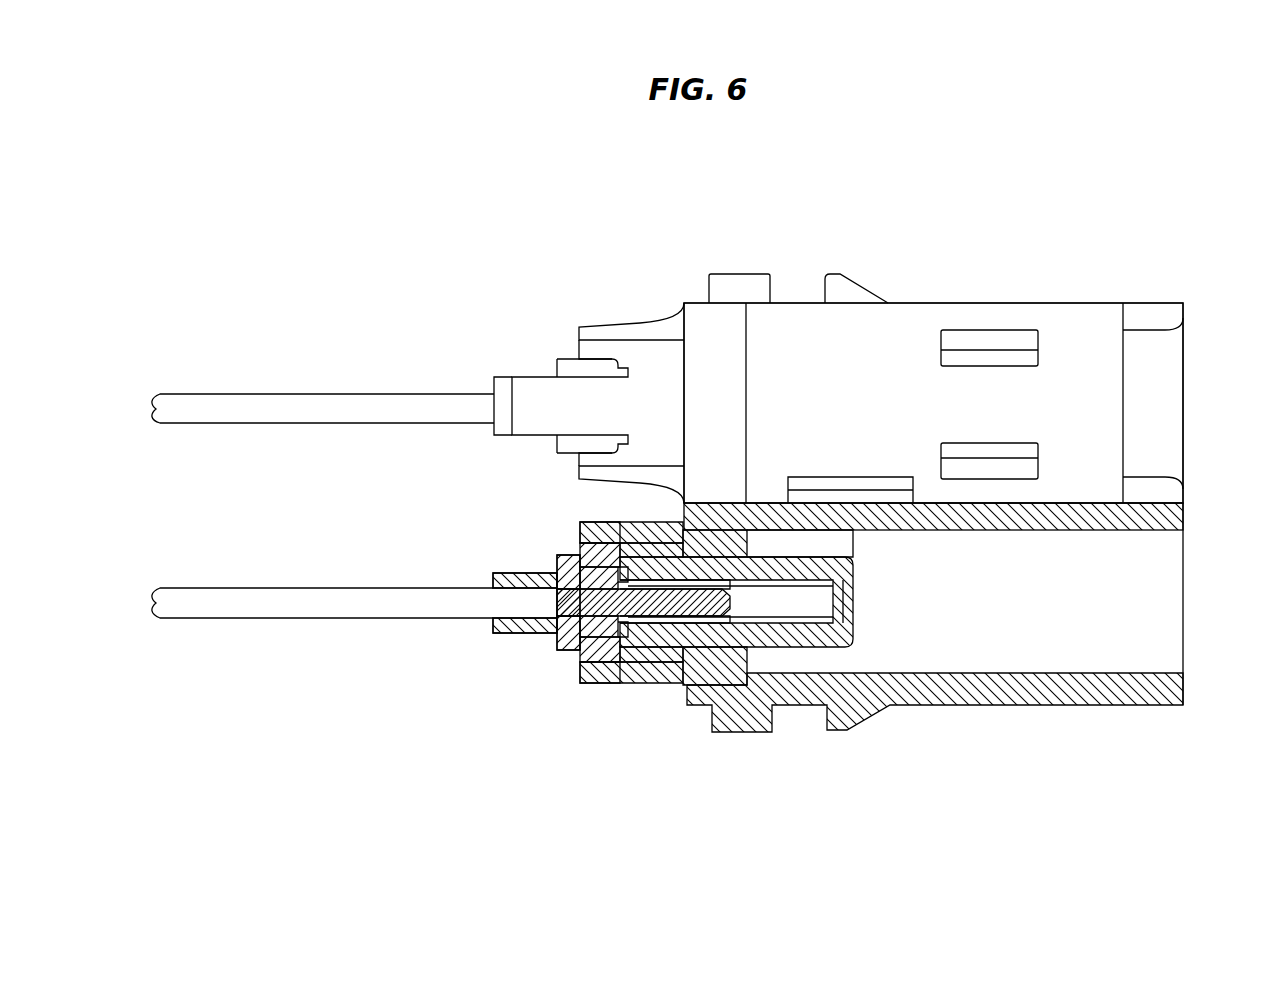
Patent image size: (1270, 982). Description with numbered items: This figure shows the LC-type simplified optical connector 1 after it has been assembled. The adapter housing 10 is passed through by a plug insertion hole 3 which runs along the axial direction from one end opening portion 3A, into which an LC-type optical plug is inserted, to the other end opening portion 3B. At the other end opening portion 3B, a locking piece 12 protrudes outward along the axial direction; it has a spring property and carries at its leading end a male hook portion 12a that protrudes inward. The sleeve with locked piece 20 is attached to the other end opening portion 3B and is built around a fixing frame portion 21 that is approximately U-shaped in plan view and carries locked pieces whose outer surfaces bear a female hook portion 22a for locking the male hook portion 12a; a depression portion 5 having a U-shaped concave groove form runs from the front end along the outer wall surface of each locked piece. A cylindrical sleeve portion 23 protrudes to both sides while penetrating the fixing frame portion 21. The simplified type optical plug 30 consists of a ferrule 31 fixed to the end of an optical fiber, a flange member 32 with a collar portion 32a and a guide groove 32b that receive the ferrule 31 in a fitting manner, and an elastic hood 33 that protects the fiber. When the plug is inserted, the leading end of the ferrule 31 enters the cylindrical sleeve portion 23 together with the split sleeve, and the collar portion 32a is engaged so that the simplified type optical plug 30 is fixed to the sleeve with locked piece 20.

The LC-type simplified optical connector 1 is at (1114, 286).
The adapter housing 10 is at (937, 314).
The plug insertion hole 3 is at (1010, 672).
The one end opening portion 3A is at (1185, 558).
The other end opening portion 3B is at (652, 690).
The locking piece 12 is at (620, 522).
The male hook portion 12a is at (592, 574).
The female hook portion 22a is at (567, 524).
The depression portion 5 is at (605, 546).
The sleeve with locked piece 20 is at (862, 642).
The fixing frame portion 21 is at (736, 690).
The cylindrical sleeve portion 23 is at (826, 553).
The ferrule 31 is at (778, 690).
The simplified type optical plug 30 is at (504, 573).
The hood 33 is at (497, 635).
The flange member 32 is at (532, 738).
The collar portion 32a is at (558, 652).
The guide groove 32b is at (571, 650).